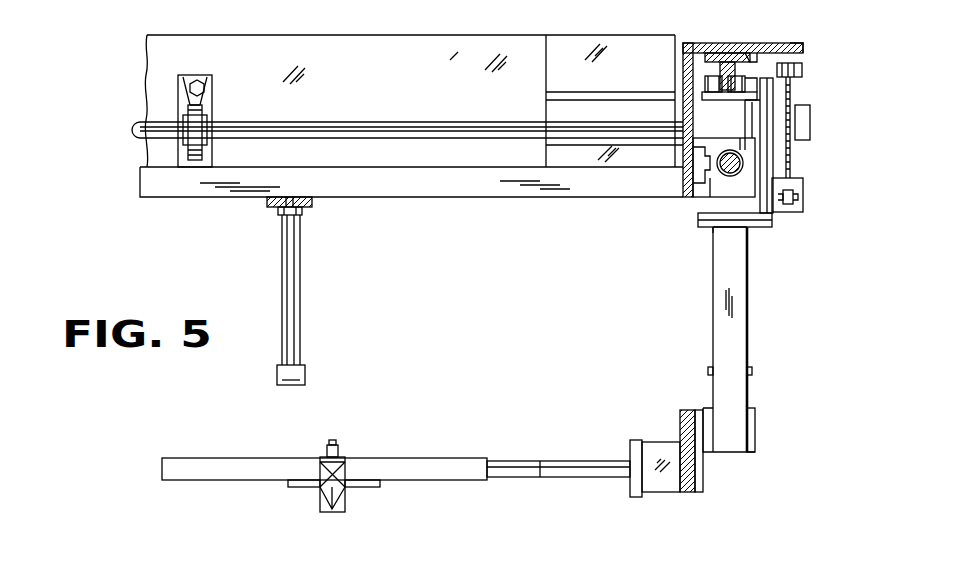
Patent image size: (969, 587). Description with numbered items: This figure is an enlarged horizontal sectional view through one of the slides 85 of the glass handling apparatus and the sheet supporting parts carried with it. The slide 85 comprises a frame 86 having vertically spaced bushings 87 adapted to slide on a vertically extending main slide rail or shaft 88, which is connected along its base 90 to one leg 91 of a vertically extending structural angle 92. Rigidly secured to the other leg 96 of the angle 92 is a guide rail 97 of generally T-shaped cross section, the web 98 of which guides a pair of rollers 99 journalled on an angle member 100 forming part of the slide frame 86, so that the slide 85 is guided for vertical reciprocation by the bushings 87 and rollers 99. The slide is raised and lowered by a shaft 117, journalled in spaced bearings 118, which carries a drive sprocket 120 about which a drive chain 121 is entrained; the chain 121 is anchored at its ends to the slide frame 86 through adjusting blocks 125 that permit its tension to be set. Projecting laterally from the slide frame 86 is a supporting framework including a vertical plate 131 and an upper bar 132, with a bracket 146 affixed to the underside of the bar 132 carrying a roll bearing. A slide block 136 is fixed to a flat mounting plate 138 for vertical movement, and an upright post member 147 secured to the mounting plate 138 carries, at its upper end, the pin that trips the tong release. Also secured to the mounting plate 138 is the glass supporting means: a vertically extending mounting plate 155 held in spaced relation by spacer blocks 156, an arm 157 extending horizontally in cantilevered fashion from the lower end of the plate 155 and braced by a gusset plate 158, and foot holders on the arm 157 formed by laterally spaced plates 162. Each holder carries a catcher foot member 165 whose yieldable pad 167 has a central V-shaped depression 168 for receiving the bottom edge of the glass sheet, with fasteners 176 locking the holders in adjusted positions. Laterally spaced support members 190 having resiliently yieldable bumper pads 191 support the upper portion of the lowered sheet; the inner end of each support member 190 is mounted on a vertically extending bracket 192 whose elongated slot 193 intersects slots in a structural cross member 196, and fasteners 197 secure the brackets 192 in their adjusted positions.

The slide 85 is at (762, 240).
The frame 86 is at (773, 217).
The bushings 87 is at (733, 213).
The main slide rail or shaft 88 is at (723, 185).
The base 90 is at (700, 178).
The leg 91 is at (683, 127).
The structural angle 92 is at (689, 40).
The other leg 96 is at (792, 42).
The guide rail 97 is at (727, 55).
The web 98 is at (753, 55).
The rollers 99 is at (705, 80).
The angle member 100 is at (702, 97).
The shafts 117 is at (387, 135).
The bearings 118 is at (200, 110).
The drive sprocket 120 is at (790, 163).
The drive chain 121 is at (805, 70).
The adjusting blocks 125 is at (803, 185).
The vertical plate 131 is at (707, 222).
The upper bar 132 is at (720, 293).
The slide block 136 is at (757, 440).
The mounting plate 138 is at (703, 478).
The bracket 146 is at (753, 370).
The upright post member 147 is at (680, 420).
The mounting plate 155 is at (633, 447).
The spacer blocks 156 is at (655, 445).
The arm 157 is at (462, 460).
The gusset plate 158 is at (532, 458).
The plates 162 is at (297, 487).
The catcher foot member 165 is at (318, 470).
The pad 167 is at (350, 462).
The V-shaped depression 168 is at (350, 478).
The fasteners 176 is at (332, 442).
The support members 190 is at (305, 287).
The bumper pads 191 is at (277, 380).
The bracket 192 is at (270, 201).
The elongated slot 193 is at (290, 197).
The structural cross member 196 is at (142, 183).
The fasteners 197 is at (283, 213).